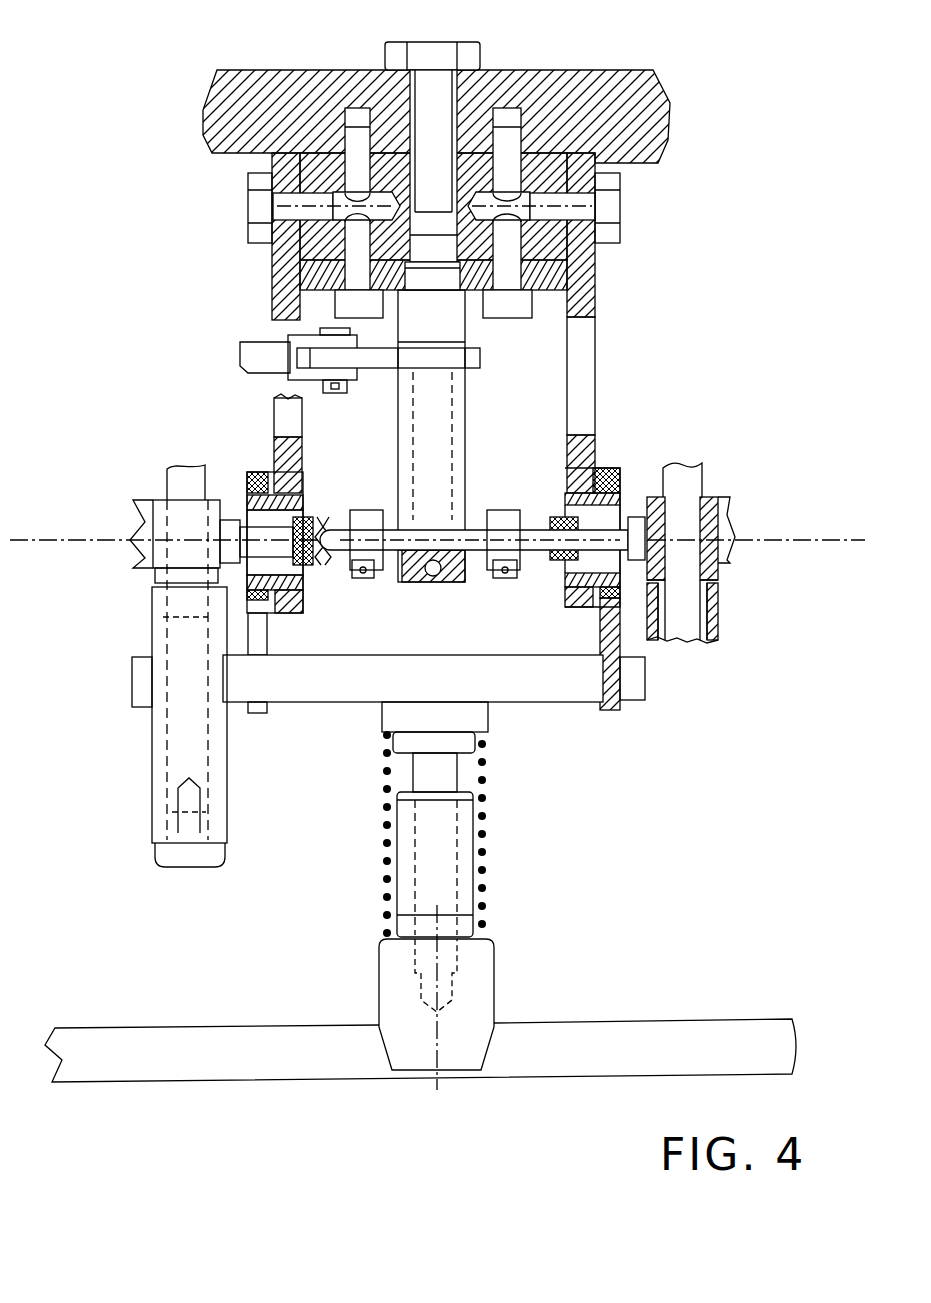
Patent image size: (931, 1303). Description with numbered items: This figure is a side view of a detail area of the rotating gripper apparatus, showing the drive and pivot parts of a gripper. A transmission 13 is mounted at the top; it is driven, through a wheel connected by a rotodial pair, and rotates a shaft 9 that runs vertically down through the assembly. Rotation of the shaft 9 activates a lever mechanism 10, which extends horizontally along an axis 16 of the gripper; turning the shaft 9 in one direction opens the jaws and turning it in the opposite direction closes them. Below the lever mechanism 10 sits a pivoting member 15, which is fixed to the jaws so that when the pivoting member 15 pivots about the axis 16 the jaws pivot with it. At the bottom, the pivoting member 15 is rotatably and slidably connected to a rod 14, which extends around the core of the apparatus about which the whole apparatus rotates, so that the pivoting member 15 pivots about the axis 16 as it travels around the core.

The shaft 9 is at (468, 412).
The lever mechanism 10 is at (635, 497).
The transmission 13 is at (250, 358).
The rod 14 is at (639, 1032).
The pivoting member 15 is at (457, 857).
The axis 16 is at (786, 535).